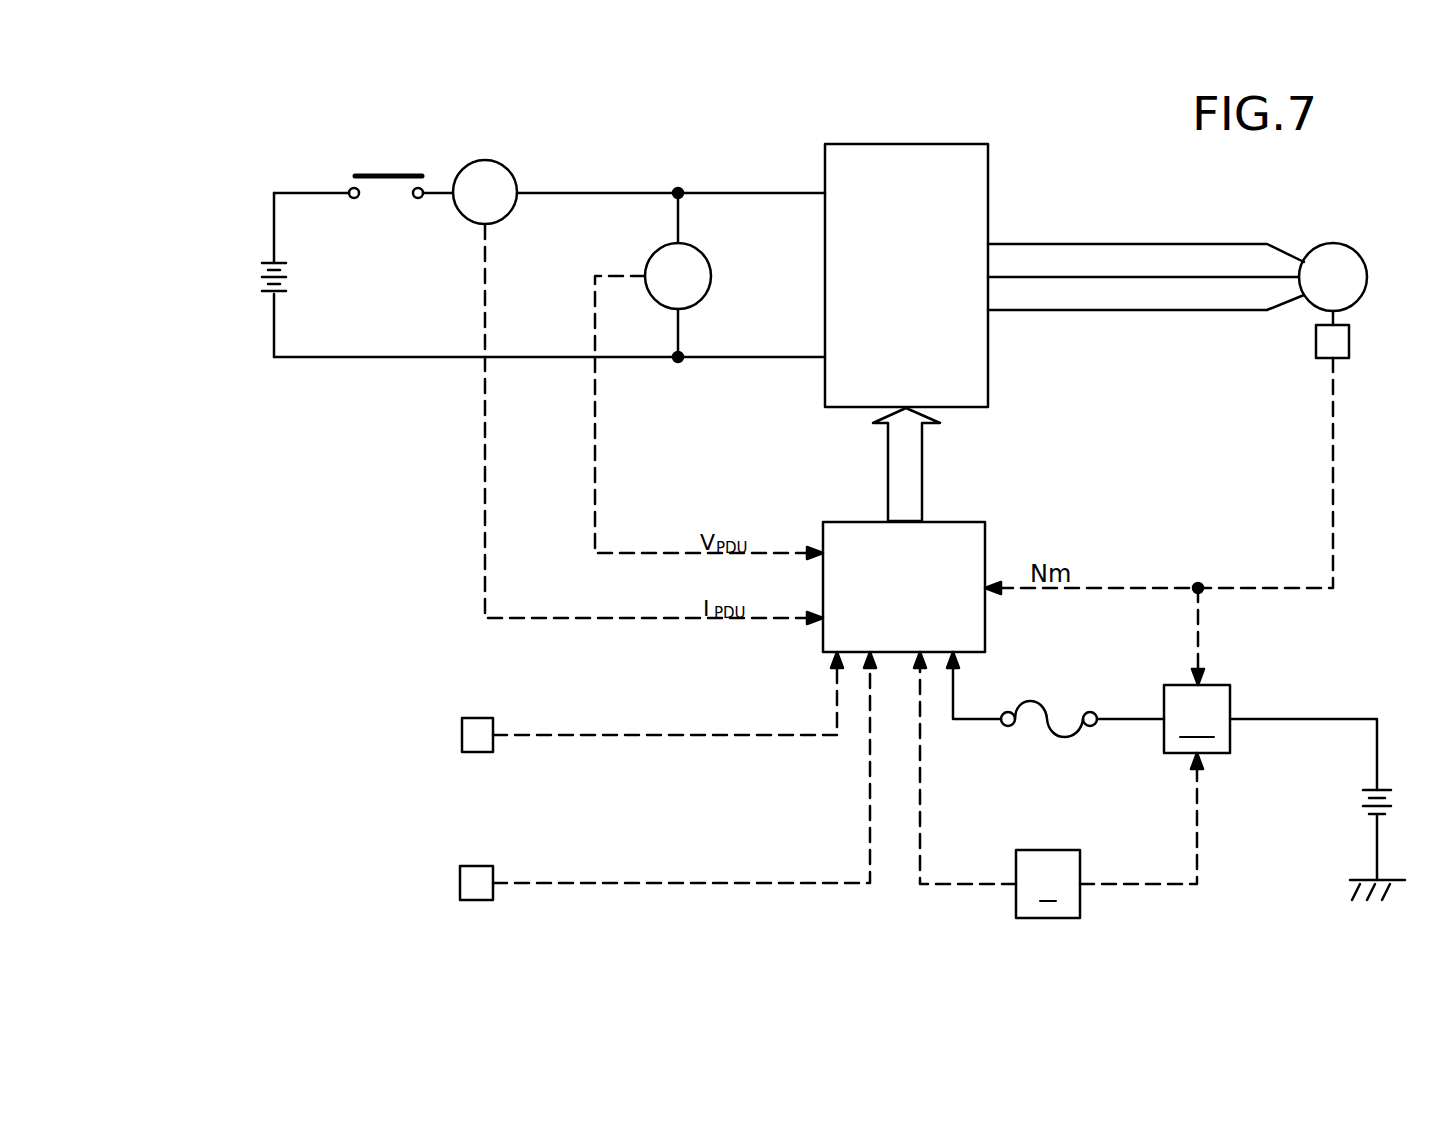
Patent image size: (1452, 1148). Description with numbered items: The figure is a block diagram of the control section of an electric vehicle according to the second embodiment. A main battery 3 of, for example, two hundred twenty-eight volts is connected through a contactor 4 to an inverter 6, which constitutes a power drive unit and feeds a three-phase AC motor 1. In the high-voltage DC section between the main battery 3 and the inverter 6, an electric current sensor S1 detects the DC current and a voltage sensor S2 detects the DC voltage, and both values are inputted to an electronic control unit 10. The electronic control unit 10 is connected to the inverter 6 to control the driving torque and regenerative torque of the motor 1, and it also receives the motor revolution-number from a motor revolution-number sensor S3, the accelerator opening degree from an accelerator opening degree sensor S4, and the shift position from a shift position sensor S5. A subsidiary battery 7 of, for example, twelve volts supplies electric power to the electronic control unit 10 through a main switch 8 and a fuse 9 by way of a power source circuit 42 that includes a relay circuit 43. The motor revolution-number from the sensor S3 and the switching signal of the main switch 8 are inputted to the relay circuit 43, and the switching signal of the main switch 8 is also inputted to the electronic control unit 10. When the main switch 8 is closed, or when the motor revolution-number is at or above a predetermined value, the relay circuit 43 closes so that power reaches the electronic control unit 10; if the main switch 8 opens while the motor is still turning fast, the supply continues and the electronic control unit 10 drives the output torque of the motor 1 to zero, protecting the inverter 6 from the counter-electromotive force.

The three-phase AC motor 1 is at (1360, 257).
The main battery 3 is at (288, 284).
The contactor 4 is at (382, 175).
The inverter 6 is at (990, 168).
The subsidiary battery 7 is at (1362, 801).
The main switch 8 is at (1058, 785).
The fuse 9 is at (1036, 705).
The electronic control unit 10 is at (987, 540).
The power source circuit 42 is at (1306, 772).
The relay circuit 43 is at (1197, 719).
The electric current sensor S1 is at (503, 168).
The voltage sensor S2 is at (702, 251).
The motor revolution-number sensor S3 is at (1349, 343).
The accelerator opening degree sensor S4 is at (462, 742).
The shift position sensor S5 is at (460, 890).